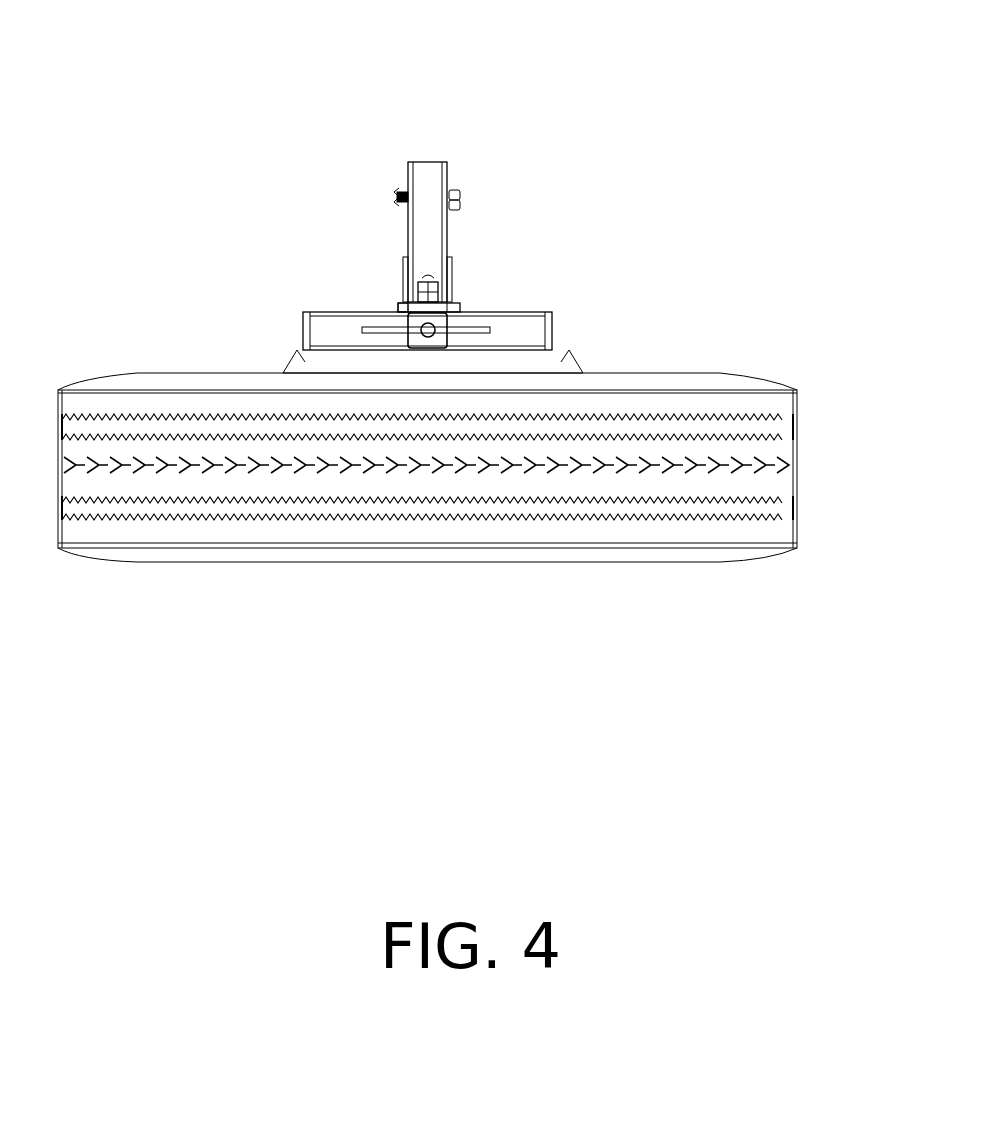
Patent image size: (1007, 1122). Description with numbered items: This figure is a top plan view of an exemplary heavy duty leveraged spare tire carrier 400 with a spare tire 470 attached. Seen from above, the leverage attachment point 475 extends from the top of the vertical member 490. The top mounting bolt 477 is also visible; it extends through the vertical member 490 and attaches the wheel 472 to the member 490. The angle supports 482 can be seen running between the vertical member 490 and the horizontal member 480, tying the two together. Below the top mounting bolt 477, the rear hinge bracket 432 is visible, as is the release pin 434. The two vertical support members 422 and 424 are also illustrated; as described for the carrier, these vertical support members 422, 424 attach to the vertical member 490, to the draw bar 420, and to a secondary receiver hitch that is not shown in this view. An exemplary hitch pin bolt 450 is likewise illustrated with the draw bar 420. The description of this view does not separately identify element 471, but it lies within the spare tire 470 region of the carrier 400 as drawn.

The heavy duty leveraged spare tire carrier 400 is at (224, 822).
The draw bar 420 is at (422, 162).
The vertical support member 422 is at (413, 302).
The vertical support member 424 is at (450, 258).
The rear hinge bracket 432 is at (417, 304).
The release pin 434 is at (438, 283).
The hitch pin bolt 450 is at (455, 187).
The spare tire 470 is at (427, 539).
The brush drum 471 is at (292, 545).
The wheel 472 is at (283, 356).
The leverage attachment point 475 is at (440, 327).
The top mounting bolt 477 is at (393, 303).
The horizontal member 480 is at (537, 328).
The angle supports 482 is at (493, 330).
The vertical member 490 is at (432, 346).